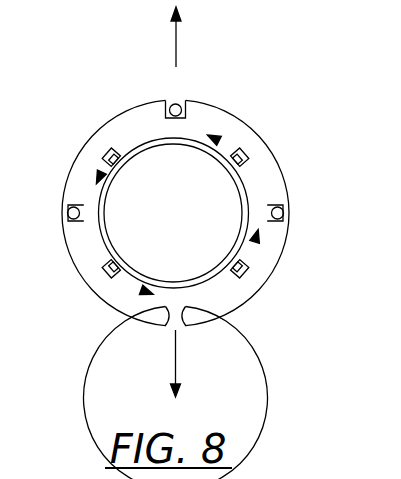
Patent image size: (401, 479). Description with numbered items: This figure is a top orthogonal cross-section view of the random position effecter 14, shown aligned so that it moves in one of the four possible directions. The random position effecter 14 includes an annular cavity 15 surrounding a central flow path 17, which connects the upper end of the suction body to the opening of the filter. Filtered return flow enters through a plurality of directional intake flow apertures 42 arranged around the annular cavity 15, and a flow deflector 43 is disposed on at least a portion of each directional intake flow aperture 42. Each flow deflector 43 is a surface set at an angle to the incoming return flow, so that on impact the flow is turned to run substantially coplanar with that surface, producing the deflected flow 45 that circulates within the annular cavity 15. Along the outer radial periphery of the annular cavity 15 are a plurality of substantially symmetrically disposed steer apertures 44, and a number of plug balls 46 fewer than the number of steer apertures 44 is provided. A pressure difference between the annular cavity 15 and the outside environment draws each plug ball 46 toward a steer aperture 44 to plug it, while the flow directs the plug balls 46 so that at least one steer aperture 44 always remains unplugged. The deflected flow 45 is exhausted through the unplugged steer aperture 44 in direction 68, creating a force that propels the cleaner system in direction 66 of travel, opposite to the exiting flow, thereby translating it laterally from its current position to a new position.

The random position effecter 14 is at (339, 140).
The annular cavity 15 is at (203, 295).
The flow path 17 is at (207, 222).
The directional intake flow apertures 42 is at (113, 160).
The flow deflector 43 is at (106, 146).
The steer apertures 44 is at (175, 105).
The deflected flow 45 is at (102, 172).
The plug balls 46 is at (178, 105).
The direction of travel 66 is at (176, 33).
The exhaust direction 68 is at (175, 372).